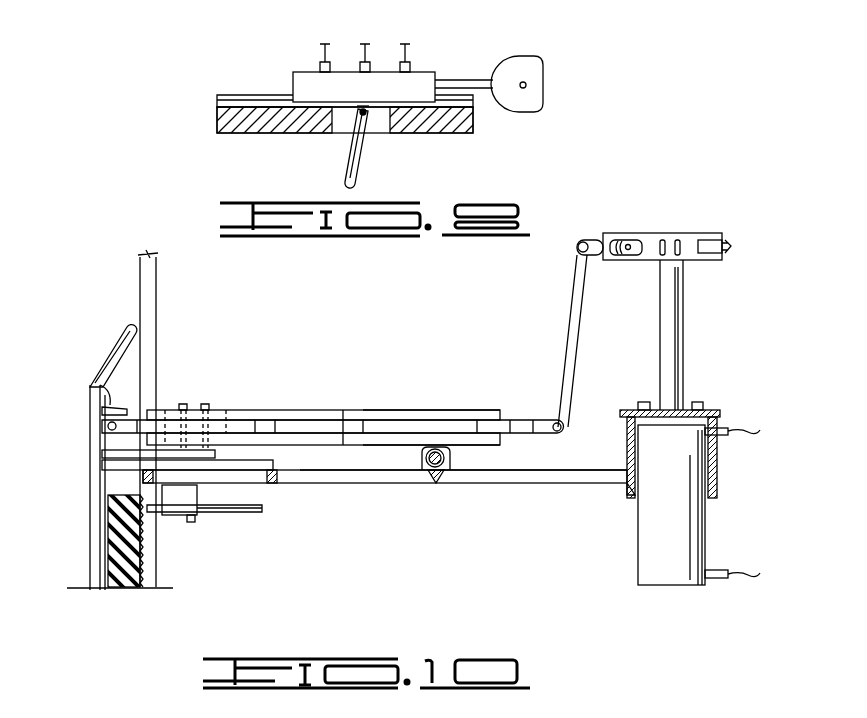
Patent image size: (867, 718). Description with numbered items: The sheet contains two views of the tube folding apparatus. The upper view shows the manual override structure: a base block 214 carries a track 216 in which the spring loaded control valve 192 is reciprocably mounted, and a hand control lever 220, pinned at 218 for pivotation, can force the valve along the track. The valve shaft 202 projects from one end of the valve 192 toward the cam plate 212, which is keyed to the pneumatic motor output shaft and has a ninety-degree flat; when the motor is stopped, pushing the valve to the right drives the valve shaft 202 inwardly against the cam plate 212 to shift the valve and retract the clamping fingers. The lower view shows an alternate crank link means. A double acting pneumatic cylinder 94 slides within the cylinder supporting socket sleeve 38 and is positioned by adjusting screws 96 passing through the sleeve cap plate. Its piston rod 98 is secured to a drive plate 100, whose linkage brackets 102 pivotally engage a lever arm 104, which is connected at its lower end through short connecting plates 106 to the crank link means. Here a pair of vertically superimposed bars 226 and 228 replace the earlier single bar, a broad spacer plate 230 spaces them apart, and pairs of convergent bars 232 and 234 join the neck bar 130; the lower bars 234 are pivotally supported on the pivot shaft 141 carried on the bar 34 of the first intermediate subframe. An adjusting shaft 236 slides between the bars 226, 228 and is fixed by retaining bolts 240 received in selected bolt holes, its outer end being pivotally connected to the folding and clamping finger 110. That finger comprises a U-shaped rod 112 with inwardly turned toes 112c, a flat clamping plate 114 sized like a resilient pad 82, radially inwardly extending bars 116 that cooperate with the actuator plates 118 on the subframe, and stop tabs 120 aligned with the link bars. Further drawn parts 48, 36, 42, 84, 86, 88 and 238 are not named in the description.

In FIG. 9, the spring loaded control valve 192 is at (378, 93).
In FIG. 9, the valve shaft 202 is at (470, 80).
In FIG. 9, the cam plate 212 is at (530, 62).
In FIG. 9, the base block 214 is at (240, 118).
In FIG. 9, the track 216 is at (250, 96).
In FIG. 9, the pivot pin 218 is at (350, 122).
In FIG. 9, the hand control lever 220 is at (358, 163).
In FIG. 10, the post 48 is at (152, 280).
In FIG. 10, the inwardly turned parallel toes 112c is at (120, 338).
In FIG. 10, the stop tabs 120 is at (100, 393).
In FIG. 10, the folding and clamping finger 110 is at (92, 427).
In FIG. 10, the radially inwardly extending bars 116 is at (104, 455).
In FIG. 10, the flat clamping plate 114 is at (100, 478).
In FIG. 10, the U-shaped rod 112 is at (98, 510).
In FIG. 10, the resilient pad 82 is at (115, 548).
In FIG. 10, the floor 84 is at (145, 576).
In FIG. 10, the slide block 88 is at (180, 510).
In FIG. 10, the rod 86 is at (238, 513).
In FIG. 10, the actuator plates 118 is at (245, 468).
In FIG. 10, the adjusting shaft 236 is at (165, 410).
In FIG. 10, the retaining bolts 240 is at (185, 404).
In FIG. 10, the pin 238 is at (228, 410).
In FIG. 10, the upper superimposed bar 226 is at (255, 412).
In FIG. 10, the spacer plate 230 is at (300, 432).
In FIG. 10, the lower superimposed bar 228 is at (288, 445).
In FIG. 10, the upper convergent bars 232 is at (418, 412).
In FIG. 10, the lower convergent bars 234 is at (370, 448).
In FIG. 10, the pivot shaft 141 is at (450, 459).
In FIG. 10, the bar of first intermediate subframe 34 is at (437, 484).
In FIG. 10, the beam 42 is at (403, 484).
In FIG. 10, the beam 36 is at (520, 484).
In FIG. 10, the cylinder supporting socket sleeve 38 is at (627, 493).
In FIG. 10, the short connecting plates 106 is at (545, 425).
In FIG. 10, the neck bar 130 is at (540, 434).
In FIG. 10, the lever arm 104 is at (573, 323).
In FIG. 10, the piston rod 98 is at (675, 325).
In FIG. 10, the adjusting screws 96 is at (643, 402).
In FIG. 10, the drive plate 100 is at (655, 234).
In FIG. 10, the linkage brackets 102 is at (592, 242).
In FIG. 10, the pneumatic cylinder 94 is at (682, 496).